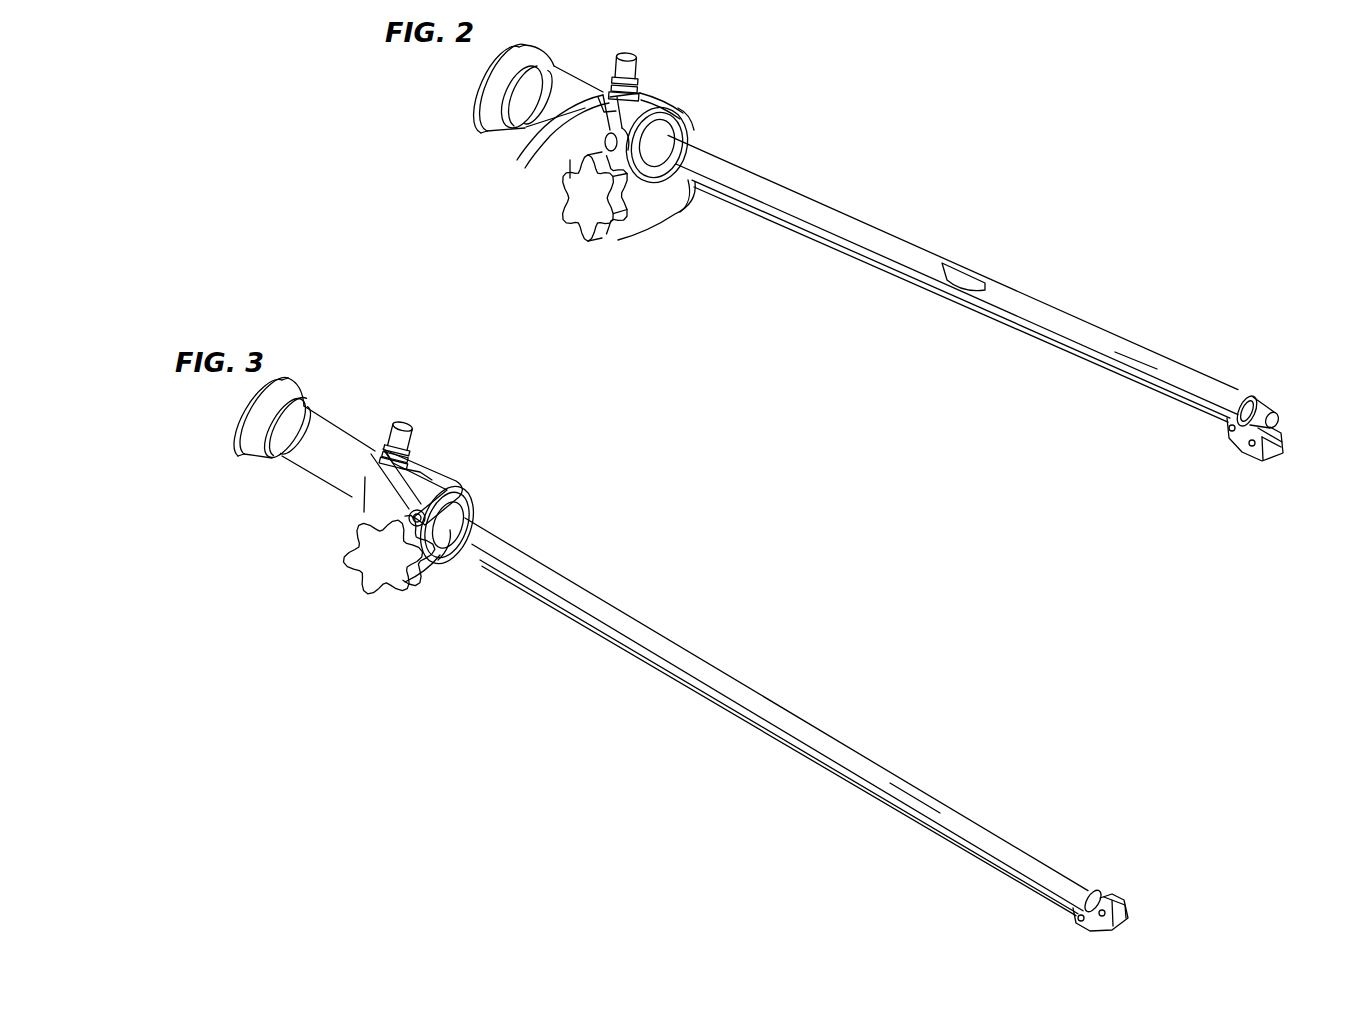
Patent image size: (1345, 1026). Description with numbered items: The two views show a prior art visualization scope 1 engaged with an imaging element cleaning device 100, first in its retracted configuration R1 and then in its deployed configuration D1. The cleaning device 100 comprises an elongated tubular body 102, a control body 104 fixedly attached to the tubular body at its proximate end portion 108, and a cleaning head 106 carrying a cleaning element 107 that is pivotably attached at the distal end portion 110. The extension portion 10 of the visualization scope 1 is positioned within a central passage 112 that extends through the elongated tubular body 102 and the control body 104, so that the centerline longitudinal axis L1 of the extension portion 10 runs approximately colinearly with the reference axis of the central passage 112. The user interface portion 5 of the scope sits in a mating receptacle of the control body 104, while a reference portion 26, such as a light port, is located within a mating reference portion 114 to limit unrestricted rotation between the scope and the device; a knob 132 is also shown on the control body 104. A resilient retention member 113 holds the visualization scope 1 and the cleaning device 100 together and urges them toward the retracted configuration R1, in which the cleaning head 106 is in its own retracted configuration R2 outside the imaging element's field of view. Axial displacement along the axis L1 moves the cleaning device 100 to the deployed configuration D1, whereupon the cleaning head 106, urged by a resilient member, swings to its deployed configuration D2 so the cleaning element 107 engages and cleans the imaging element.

In FIG. 2, the visualization scope 1 is at (476, 86).
In FIG. 3, the visualization scope 1 is at (238, 412).
In FIG. 2, the user interface portion 5 is at (593, 95).
In FIG. 3, the user interface portion 5 is at (373, 474).
In FIG. 2, the extension portion 10 is at (960, 268).
In FIG. 3, the extension portion 10 is at (779, 738).
In FIG. 2, the reference portion 26 is at (640, 63).
In FIG. 3, the reference portion 26 is at (413, 424).
In FIG. 2, the cleaning device 100 is at (769, 180).
In FIG. 3, the cleaning device 100 is at (604, 597).
In FIG. 2, the elongated tubular body 102 is at (866, 233).
In FIG. 3, the elongated tubular body 102 is at (667, 648).
In FIG. 2, the control body 104 is at (657, 210).
In FIG. 3, the control body 104 is at (427, 567).
In FIG. 2, the cleaning head 106 is at (1243, 452).
In FIG. 3, the cleaning head 106 is at (1124, 921).
In FIG. 2, the cleaning element 107 is at (1277, 452).
In FIG. 3, the cleaning element 107 is at (1120, 900).
In FIG. 2, the proximate end portion 108 is at (683, 150).
In FIG. 3, the proximate end portion 108 is at (472, 532).
In FIG. 2, the distal end portion 110 is at (1240, 394).
In FIG. 3, the distal end portion 110 is at (1091, 890).
In FIG. 2, the central passage 112 is at (955, 265).
In FIG. 2, the resilient retention member 113 is at (600, 98).
In FIG. 3, the resilient retention member 113 is at (377, 475).
In FIG. 2, the mating reference portion 114 is at (586, 110).
In FIG. 3, the mating reference portion 114 is at (422, 470).
In FIG. 2, the thumbwheel 132 is at (577, 203).
In FIG. 3, the thumbwheel 132 is at (385, 580).
In FIG. 2, the centerline longitudinal axis L1 is at (1138, 358).
In FIG. 3, the centerline longitudinal axis L1 is at (918, 797).
In FIG. 2, the retracted configuration R1 is at (662, 90).
In FIG. 2, the retracted configuration R2 is at (1222, 443).
In FIG. 3, the deployed configuration D1 is at (456, 466).
In FIG. 3, the deployed configuration D2 is at (1119, 867).